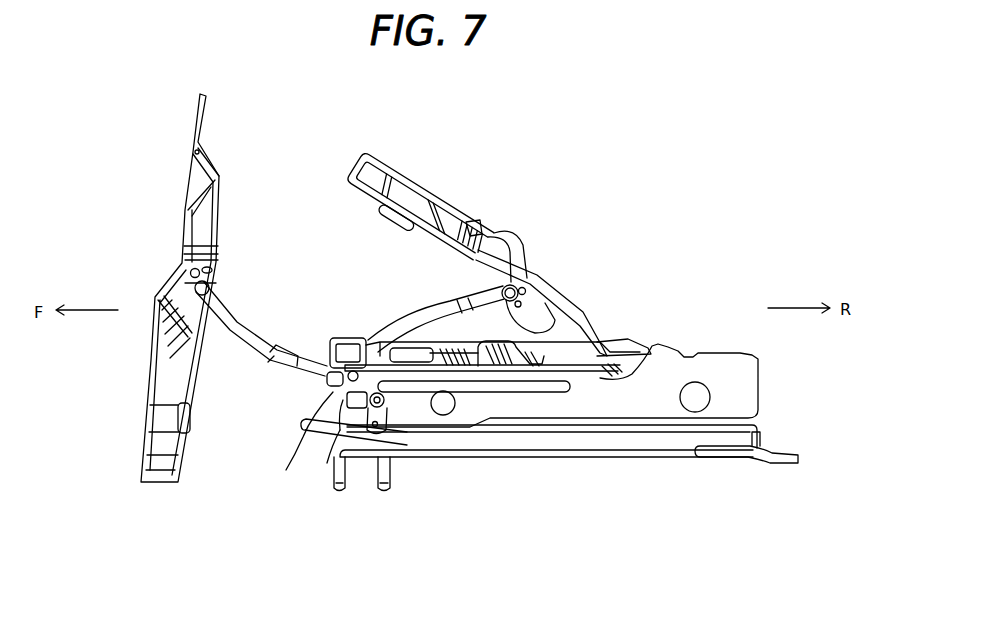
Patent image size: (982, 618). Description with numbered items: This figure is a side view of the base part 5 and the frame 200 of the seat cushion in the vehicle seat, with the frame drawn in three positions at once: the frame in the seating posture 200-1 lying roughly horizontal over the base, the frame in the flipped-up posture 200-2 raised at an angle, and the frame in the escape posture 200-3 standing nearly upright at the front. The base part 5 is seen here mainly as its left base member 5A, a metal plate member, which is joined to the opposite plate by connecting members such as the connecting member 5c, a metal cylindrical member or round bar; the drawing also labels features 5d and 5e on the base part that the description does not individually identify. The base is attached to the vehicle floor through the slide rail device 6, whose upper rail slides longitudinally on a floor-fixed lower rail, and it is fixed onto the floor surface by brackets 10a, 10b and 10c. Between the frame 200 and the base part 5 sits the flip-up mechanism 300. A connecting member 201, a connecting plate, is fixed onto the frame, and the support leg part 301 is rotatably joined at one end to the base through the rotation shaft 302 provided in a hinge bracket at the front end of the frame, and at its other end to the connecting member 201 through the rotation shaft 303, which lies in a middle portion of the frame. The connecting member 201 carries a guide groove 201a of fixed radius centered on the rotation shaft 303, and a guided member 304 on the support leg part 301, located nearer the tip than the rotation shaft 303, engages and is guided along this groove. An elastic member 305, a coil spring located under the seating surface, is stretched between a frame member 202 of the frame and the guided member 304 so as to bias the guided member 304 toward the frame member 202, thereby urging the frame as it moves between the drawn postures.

The frame 200 is at (322, 288).
The frame in the seating posture 200-1 is at (331, 337).
The frame in the flipped-up posture 200-2 is at (401, 160).
The frame in the escape posture 200-3 is at (144, 436).
The frame member 202 is at (471, 222).
The flip-up mechanism 300 is at (376, 360).
The support leg part 301 is at (430, 304).
The rotation shaft 302 is at (286, 470).
The rotation shaft 303 is at (527, 282).
The guided member 304 is at (534, 287).
The elastic member 305 is at (505, 285).
The connecting member 201 is at (545, 340).
The guide groove 201a is at (540, 311).
The base part 5 is at (578, 441).
The left base member 5A is at (769, 361).
The connecting member 5c is at (692, 412).
The frame portion 5d is at (327, 463).
The frame hole 5e is at (447, 415).
The slide rail device 6 is at (607, 450).
The bracket 10a is at (775, 464).
The bracket 10b is at (389, 490).
The bracket 10c is at (348, 490).